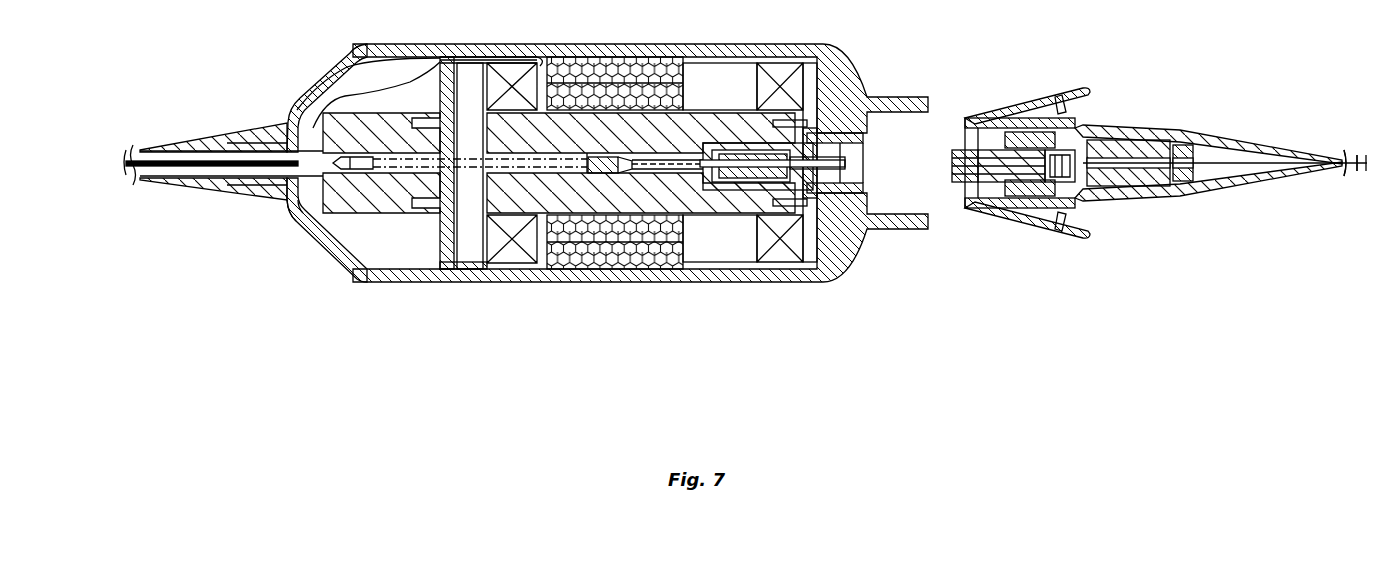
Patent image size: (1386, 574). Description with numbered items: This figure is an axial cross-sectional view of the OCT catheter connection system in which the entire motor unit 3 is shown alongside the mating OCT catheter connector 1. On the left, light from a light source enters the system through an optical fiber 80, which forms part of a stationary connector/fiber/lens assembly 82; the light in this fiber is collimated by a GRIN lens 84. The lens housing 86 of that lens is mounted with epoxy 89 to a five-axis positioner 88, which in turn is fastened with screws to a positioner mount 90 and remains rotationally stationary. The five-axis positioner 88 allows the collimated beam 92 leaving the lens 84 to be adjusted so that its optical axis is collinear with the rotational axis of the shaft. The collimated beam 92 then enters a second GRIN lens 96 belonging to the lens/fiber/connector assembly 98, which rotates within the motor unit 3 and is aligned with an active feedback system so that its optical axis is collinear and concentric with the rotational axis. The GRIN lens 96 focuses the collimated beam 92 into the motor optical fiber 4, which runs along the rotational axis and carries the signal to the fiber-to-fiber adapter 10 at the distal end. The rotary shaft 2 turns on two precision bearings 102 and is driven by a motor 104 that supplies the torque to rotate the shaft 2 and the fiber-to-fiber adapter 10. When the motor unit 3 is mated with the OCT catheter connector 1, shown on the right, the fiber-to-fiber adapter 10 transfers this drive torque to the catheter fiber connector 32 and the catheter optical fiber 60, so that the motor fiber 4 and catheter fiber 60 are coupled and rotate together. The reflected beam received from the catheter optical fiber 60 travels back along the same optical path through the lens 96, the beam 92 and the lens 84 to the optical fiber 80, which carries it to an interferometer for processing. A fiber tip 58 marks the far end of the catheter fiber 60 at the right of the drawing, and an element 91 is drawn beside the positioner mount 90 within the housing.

The OCT catheter connector 1 is at (952, 362).
The rotary shaft 2 is at (592, 200).
The motor unit 3 is at (143, 362).
The motor optical fiber 4 is at (657, 157).
The fiber-to-fiber adapter 10 is at (833, 198).
The catheter fiber connector 32 is at (950, 148).
The optical fiber end 58 is at (1350, 150).
The catheter optical fiber 60 is at (1357, 173).
The optical fiber 80 is at (305, 113).
The connector/fiber/lens assembly 82 is at (307, 217).
The GRIN lens 84 is at (358, 135).
The lens housing 86 is at (345, 217).
The five-axis positioner 88 is at (365, 113).
The epoxy 89 is at (353, 172).
The positioner mount 90 is at (431, 255).
The insulating plate 91 is at (481, 255).
The collimated beam 92 is at (463, 57).
The GRIN lens 96 is at (590, 150).
The lens/fiber/connector assembly 98 is at (633, 232).
The precision bearings 102 is at (777, 257).
The motor 104 is at (693, 240).